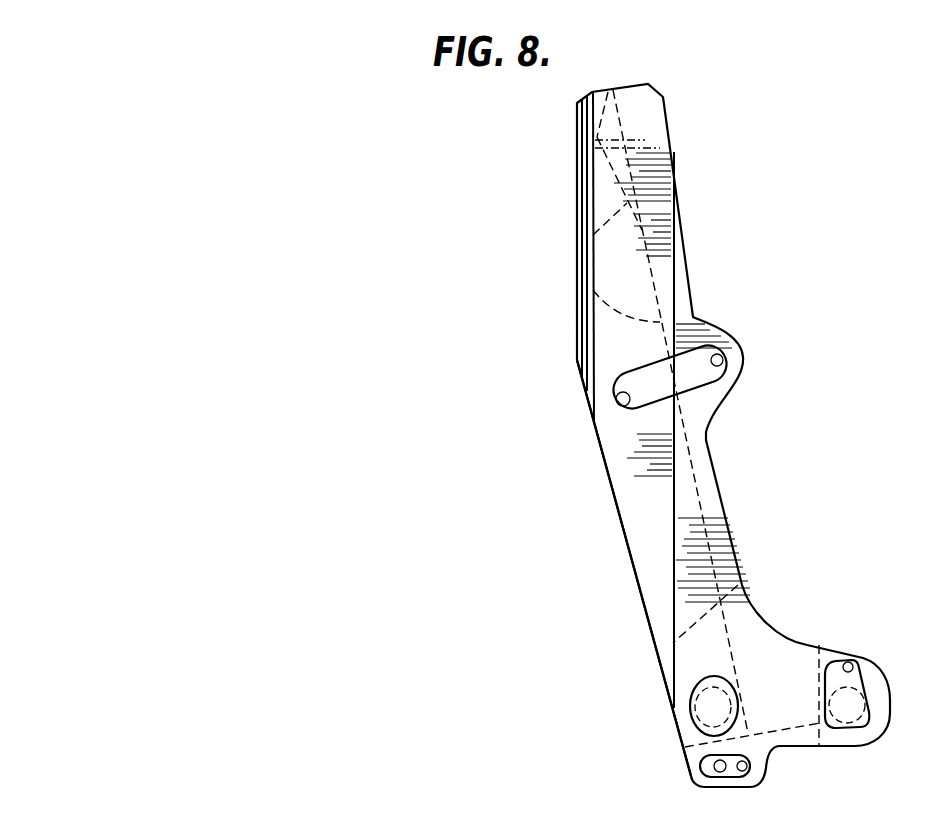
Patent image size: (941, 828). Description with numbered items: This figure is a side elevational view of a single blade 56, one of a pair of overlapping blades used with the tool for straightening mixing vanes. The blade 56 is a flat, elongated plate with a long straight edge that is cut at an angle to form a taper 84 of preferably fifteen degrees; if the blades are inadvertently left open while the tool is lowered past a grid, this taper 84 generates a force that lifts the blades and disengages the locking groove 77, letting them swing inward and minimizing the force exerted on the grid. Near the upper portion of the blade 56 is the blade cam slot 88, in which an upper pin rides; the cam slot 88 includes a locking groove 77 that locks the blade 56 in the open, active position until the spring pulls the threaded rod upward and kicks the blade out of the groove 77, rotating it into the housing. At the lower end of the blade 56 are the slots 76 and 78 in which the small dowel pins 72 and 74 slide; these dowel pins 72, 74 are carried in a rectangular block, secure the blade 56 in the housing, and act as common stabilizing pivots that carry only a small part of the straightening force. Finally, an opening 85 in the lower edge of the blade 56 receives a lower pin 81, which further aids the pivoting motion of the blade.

The blade 56 is at (715, 496).
The dowel pin 72 is at (870, 693).
The dowel pin 74 is at (700, 722).
The slot 76 is at (853, 668).
The locking groove 77 is at (722, 360).
The slot 78 is at (689, 716).
The lower pin 81 is at (696, 784).
The taper 84 is at (626, 542).
The opening 85 is at (752, 763).
The blade cam slot 88 is at (624, 412).